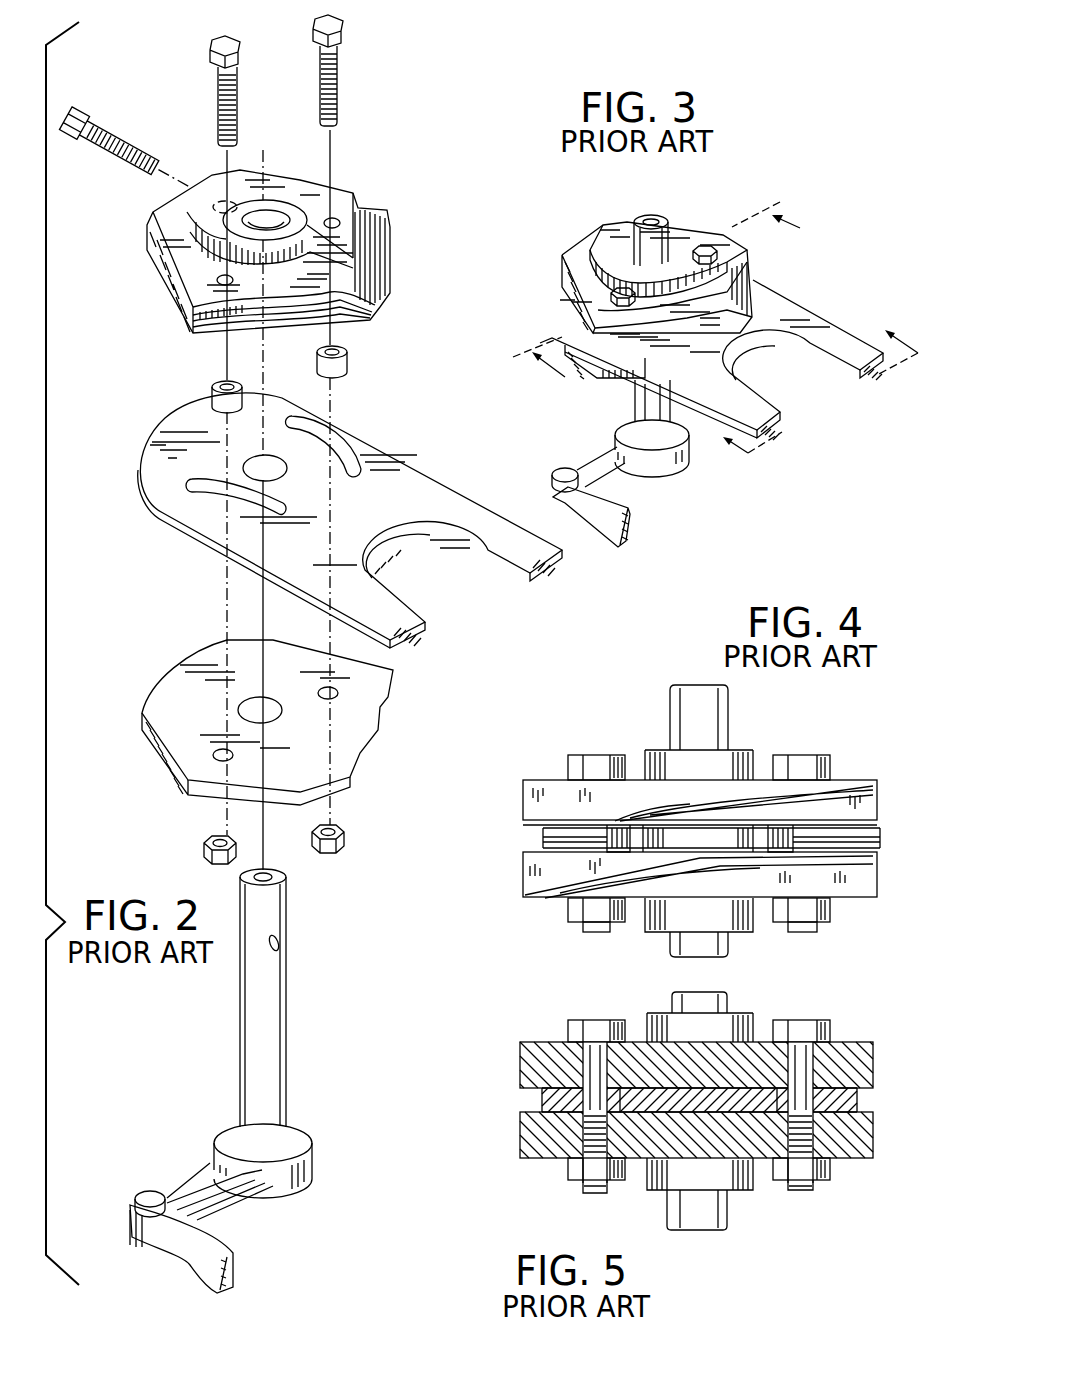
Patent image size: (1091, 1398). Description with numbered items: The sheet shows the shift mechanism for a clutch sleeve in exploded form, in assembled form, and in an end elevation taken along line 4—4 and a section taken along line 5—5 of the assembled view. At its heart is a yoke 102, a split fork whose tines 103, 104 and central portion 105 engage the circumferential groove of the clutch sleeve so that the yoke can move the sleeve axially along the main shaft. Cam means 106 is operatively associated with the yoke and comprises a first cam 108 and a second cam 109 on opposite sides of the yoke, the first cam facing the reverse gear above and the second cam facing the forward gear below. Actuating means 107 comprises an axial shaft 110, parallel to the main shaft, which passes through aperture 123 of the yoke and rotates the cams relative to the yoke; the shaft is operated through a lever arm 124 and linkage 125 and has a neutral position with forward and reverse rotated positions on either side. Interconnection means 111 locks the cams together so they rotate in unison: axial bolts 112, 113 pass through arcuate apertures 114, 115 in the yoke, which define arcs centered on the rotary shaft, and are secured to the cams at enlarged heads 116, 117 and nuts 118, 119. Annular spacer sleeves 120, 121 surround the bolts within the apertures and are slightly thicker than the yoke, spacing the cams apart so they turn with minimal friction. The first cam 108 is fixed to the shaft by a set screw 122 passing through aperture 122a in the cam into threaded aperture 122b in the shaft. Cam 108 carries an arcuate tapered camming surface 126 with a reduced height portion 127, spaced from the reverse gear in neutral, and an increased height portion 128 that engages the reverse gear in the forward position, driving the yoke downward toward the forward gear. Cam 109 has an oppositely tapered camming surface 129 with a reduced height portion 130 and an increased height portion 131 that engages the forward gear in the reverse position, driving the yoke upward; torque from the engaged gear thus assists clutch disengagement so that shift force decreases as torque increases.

In FIG. 3, the line 4— 4 is at (809, 379).
In FIG. 3, the line 5— 5 is at (660, 303).
In FIG. 2, the yoke 102 is at (347, 520).
In FIG. 3, the yoke 102 is at (815, 308).
In FIG. 5, the yoke 102 is at (648, 1095).
In FIG. 2, the tine 103 is at (393, 587).
In FIG. 4, the tine 103 is at (543, 838).
In FIG. 2, the tine 104 is at (488, 554).
In FIG. 4, the tine 104 is at (860, 842).
In FIG. 2, the central portion 105 is at (420, 525).
In FIG. 2, the cam means 106 is at (276, 254).
In FIG. 3, the cam means 106 is at (661, 245).
In FIG. 2, the actuating means 107 is at (248, 1081).
In FIG. 2, the first cam 108 is at (180, 310).
In FIG. 3, the first cam 108 is at (565, 300).
In FIG. 5, the first cam 108 is at (757, 1050).
In FIG. 2, the second cam 109 is at (175, 780).
In FIG. 3, the second cam 109 is at (597, 376).
In FIG. 5, the second cam 109 is at (547, 1150).
In FIG. 2, the axial shaft 110 is at (305, 998).
In FIG. 3, the axial shaft 110 is at (636, 402).
In FIG. 4, the axial shaft 110 is at (685, 692).
In FIG. 5, the axial shaft 110 is at (730, 1203).
In FIG. 2, the interconnection means 111 is at (368, 101).
In FIG. 2, the axial bolt 112 is at (218, 82).
In FIG. 4, the axial bolt 112 is at (590, 929).
In FIG. 5, the axial bolt 112 is at (593, 1062).
In FIG. 2, the axial bolt 113 is at (342, 78).
In FIG. 4, the axial bolt 113 is at (807, 933).
In FIG. 5, the axial bolt 113 is at (808, 1066).
In FIG. 2, the aperture 114 is at (240, 513).
In FIG. 2, the aperture 115 is at (347, 467).
In FIG. 2, the enlarged head 116 is at (229, 91).
In FIG. 3, the enlarged head 116 is at (611, 293).
In FIG. 4, the enlarged head 116 is at (613, 755).
In FIG. 5, the enlarged head 116 is at (583, 1020).
In FIG. 2, the enlarged head 117 is at (359, 70).
In FIG. 3, the enlarged head 117 is at (707, 246).
In FIG. 4, the enlarged head 117 is at (802, 755).
In FIG. 5, the enlarged head 117 is at (813, 1020).
In FIG. 2, the nut 118 is at (203, 850).
In FIG. 4, the nut 118 is at (573, 915).
In FIG. 5, the nut 118 is at (583, 1173).
In FIG. 2, the nut 119 is at (341, 828).
In FIG. 4, the nut 119 is at (823, 908).
In FIG. 5, the nut 119 is at (827, 1175).
In FIG. 2, the annular spacer sleeve 120 is at (210, 397).
In FIG. 5, the annular spacer sleeve 120 is at (560, 1093).
In FIG. 2, the annular spacer sleeve 121 is at (348, 363).
In FIG. 5, the annular spacer sleeve 121 is at (855, 1103).
In FIG. 2, the set screw 122 is at (86, 110).
In FIG. 2, the aperture 122a is at (262, 218).
In FIG. 2, the threaded aperture 122b is at (284, 945).
In FIG. 2, the aperture 123 is at (268, 470).
In FIG. 2, the lever arm 124 is at (190, 1187).
In FIG. 3, the lever arm 124 is at (630, 465).
In FIG. 2, the linkage 125 is at (233, 1263).
In FIG. 3, the linkage 125 is at (630, 530).
In FIG. 2, the arcuate tapered camming surface 126 is at (380, 263).
In FIG. 3, the arcuate tapered camming surface 126 is at (740, 276).
In FIG. 4, the arcuate tapered camming surface 126 is at (755, 807).
In FIG. 2, the reduced height portion 127 is at (360, 310).
In FIG. 4, the reduced height portion 127 is at (636, 807).
In FIG. 2, the increased height portion 128 is at (325, 208).
In FIG. 3, the increased height portion 128 is at (668, 270).
In FIG. 4, the increased height portion 128 is at (707, 770).
In FIG. 4, the tapered arcuate camming surface 129 is at (652, 890).
In FIG. 4, the reduced height portion 130 is at (765, 890).
In FIG. 4, the increased height portion 131 is at (530, 893).